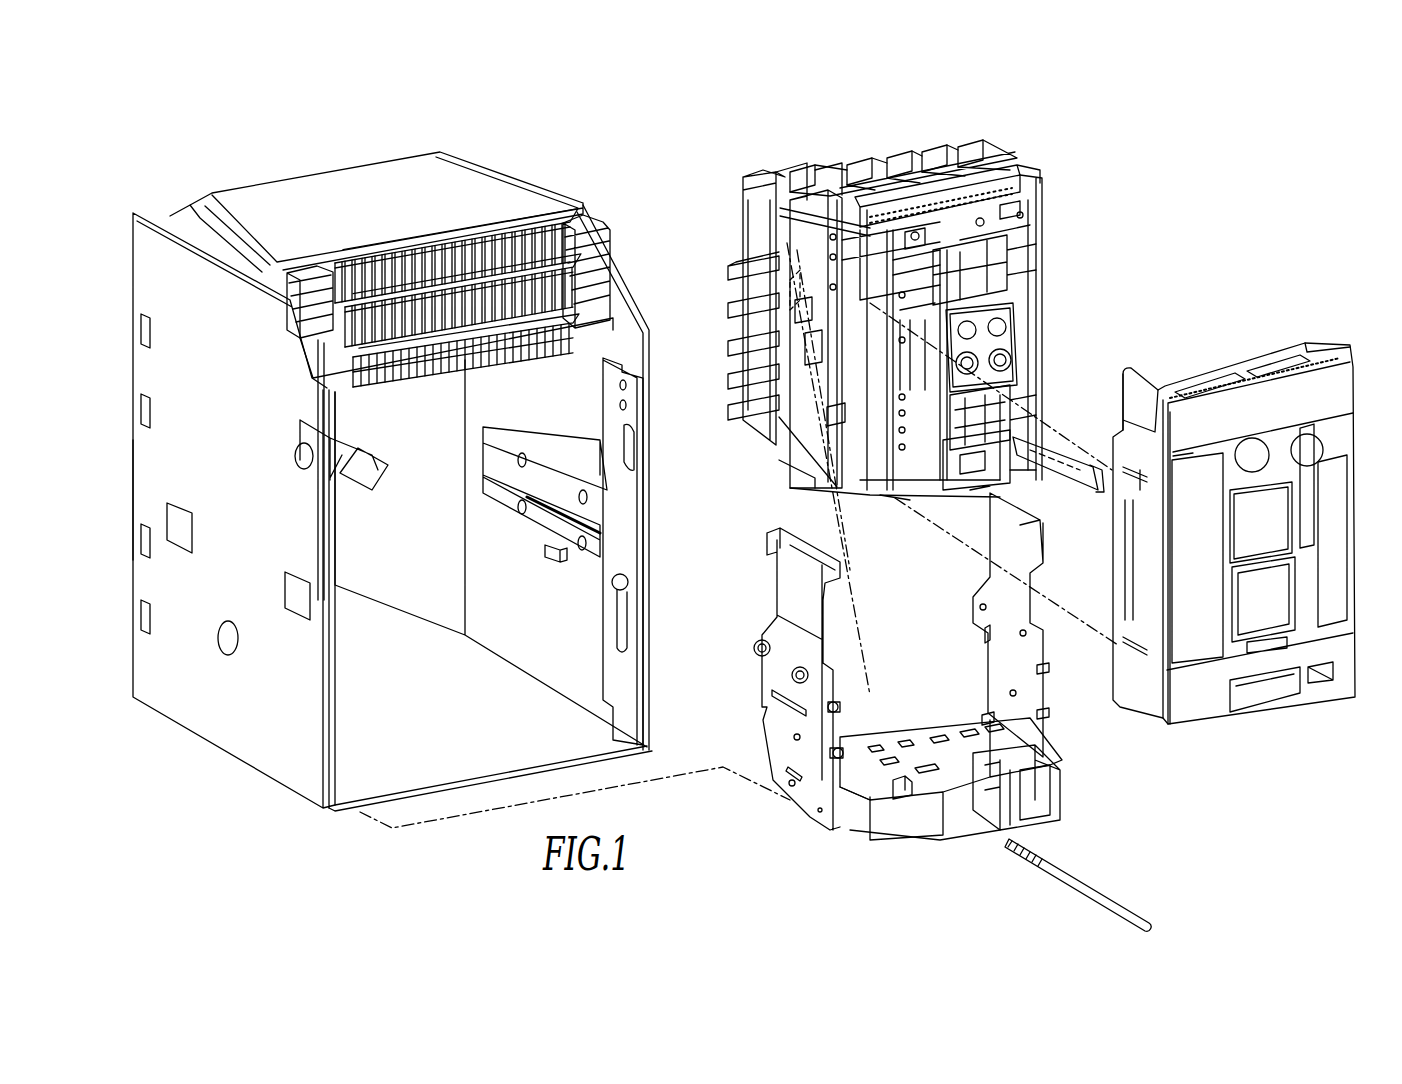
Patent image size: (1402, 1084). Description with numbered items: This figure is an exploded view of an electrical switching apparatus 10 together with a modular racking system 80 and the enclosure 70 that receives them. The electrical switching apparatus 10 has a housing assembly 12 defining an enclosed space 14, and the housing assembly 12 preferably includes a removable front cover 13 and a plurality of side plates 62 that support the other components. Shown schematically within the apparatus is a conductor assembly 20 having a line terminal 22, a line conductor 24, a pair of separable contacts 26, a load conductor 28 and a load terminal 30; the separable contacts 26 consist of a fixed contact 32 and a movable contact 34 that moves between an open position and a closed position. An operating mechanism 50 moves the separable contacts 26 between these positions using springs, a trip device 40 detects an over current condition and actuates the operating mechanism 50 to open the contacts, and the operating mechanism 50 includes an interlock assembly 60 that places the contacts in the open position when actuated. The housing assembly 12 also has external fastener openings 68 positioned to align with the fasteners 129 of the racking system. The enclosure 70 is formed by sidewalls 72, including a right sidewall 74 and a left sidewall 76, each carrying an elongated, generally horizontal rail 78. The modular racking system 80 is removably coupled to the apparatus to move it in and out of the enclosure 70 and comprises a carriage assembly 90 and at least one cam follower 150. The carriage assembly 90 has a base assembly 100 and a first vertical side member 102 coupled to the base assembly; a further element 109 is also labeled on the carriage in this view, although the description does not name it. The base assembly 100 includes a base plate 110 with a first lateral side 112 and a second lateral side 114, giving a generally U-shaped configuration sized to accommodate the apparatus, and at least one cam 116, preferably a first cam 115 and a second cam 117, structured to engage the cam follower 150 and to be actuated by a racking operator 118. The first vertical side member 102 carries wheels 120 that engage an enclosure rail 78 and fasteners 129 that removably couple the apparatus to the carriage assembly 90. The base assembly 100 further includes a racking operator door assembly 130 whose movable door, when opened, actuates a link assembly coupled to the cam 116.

The electrical switching apparatus 10 is at (738, 170).
The housing assembly 12 is at (782, 175).
The removable front cover 13 is at (1343, 427).
The enclosed space 14 is at (1037, 248).
The conductor assembly 20 is at (705, 173).
The line terminal 22 is at (732, 268).
The line conductor 24 is at (768, 262).
The pair of separable contacts 26 is at (793, 247).
The load conductor 28 is at (760, 348).
The load terminal 30 is at (745, 318).
The fixed contact 32 is at (790, 290).
The movable contact 34 is at (814, 347).
The trip device 40 is at (900, 505).
The operating mechanism 50 is at (1055, 316).
The interlock assembly 60 is at (1057, 385).
The side plates 62 is at (1018, 482).
The external fastener openings 68 is at (822, 190).
The enclosure 70 is at (243, 172).
The sidewalls 72 is at (143, 238).
The right sidewall 74 is at (567, 672).
The left sidewall 76 is at (150, 495).
The rail 78 is at (547, 507).
The modular racking system 80 is at (817, 840).
The carriage assembly 90 is at (893, 847).
The base assembly 100 is at (1033, 745).
The first vertical side member 102 is at (793, 597).
The plate opening 109 is at (997, 657).
The base plate 110 is at (917, 737).
The first lateral side 112 is at (840, 740).
The second lateral side 114 is at (987, 718).
The first cam 115 is at (1057, 763).
The cam 116 is at (1047, 837).
The second cam 117 is at (912, 800).
The racking operator 118 is at (1117, 900).
The wheels 120 is at (793, 677).
The fasteners 129 is at (1040, 708).
The racking operator door assembly 130 is at (1077, 823).
The cam follower 150 is at (963, 488).